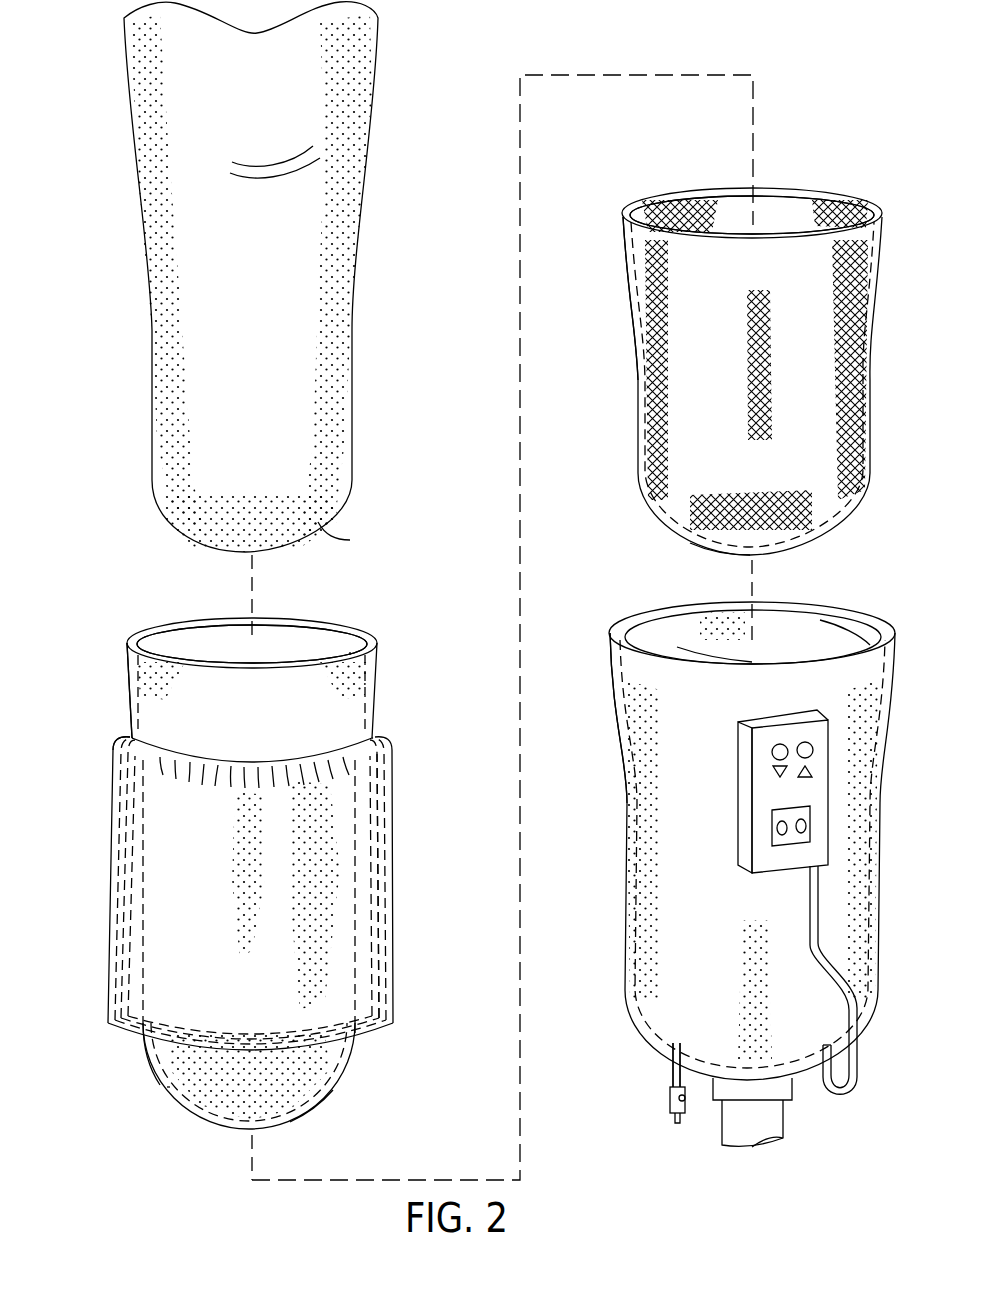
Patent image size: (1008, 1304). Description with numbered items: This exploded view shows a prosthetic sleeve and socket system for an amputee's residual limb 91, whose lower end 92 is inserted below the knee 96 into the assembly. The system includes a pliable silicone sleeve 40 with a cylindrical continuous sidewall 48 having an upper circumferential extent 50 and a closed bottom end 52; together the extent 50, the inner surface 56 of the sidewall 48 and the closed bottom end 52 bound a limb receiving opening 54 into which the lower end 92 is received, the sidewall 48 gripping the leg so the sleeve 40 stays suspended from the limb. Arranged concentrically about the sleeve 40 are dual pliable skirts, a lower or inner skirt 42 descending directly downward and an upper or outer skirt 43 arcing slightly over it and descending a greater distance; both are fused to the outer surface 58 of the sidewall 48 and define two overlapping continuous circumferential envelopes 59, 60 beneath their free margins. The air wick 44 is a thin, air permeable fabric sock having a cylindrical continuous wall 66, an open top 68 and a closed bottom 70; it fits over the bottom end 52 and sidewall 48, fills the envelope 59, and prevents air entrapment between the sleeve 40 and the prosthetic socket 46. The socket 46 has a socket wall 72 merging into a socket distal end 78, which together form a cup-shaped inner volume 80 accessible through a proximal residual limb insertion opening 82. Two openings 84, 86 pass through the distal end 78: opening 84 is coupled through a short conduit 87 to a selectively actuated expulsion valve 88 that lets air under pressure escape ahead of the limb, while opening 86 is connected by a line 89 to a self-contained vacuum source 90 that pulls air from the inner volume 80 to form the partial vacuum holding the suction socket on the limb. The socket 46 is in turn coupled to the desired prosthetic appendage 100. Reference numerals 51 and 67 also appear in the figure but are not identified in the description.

The sleeve 40 is at (205, 1130).
The inner skirt 42 is at (110, 1005).
The outer skirt 43 is at (98, 947).
The air wick 44 is at (632, 401).
The prosthetic socket 46 is at (615, 825).
The sidewall 48 is at (372, 697).
The upper circumferential extent 50 is at (127, 640).
The sleeve top edge 51 is at (122, 723).
The closed bottom end 52 is at (292, 1125).
The limb receiving opening 54 is at (215, 640).
The inner surface 56 is at (350, 652).
The outer surface 58 is at (147, 1073).
The envelope 59 is at (363, 1033).
The envelope 60 is at (387, 980).
The wall 66 is at (630, 287).
The sleeve assembly 67 is at (443, 870).
The open top 68 is at (687, 193).
The closed bottom 70 is at (692, 543).
The socket wall 72 is at (613, 698).
The socket distal end 78 is at (802, 1077).
The inner volume 80 is at (677, 647).
The residual limb insertion opening 82 is at (820, 620).
The opening 84 is at (680, 1035).
The opening 86 is at (827, 1037).
The short conduit 87 is at (670, 1072).
The expulsion valve 88 is at (670, 1102).
The line 89 is at (857, 1063).
The vacuum source 90 is at (747, 788).
The residual limb 91 is at (142, 287).
The lower end 92 is at (348, 537).
The knee 96 is at (345, 164).
The prosthetic appendage 100 is at (705, 1138).